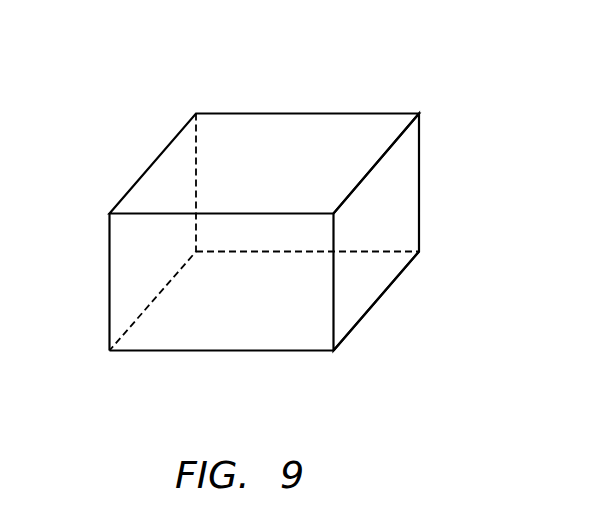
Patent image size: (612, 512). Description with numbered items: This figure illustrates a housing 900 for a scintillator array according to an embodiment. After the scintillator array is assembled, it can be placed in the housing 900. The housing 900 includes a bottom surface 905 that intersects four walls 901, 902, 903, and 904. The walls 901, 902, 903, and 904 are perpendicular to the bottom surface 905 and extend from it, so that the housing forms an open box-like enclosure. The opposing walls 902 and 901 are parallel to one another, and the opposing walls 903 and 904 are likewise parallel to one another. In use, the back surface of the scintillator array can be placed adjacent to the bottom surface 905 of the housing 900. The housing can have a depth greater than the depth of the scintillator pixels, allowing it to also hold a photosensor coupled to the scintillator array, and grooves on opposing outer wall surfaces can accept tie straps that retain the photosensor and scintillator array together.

The housing 900 is at (483, 67).
The wall 901 is at (396, 187).
The wall 902 is at (137, 275).
The wall 903 is at (253, 133).
The wall 904 is at (203, 329).
The bottom surface 905 is at (367, 281).